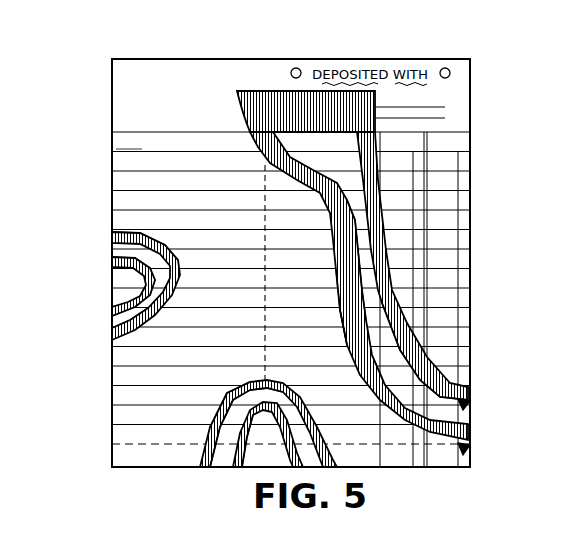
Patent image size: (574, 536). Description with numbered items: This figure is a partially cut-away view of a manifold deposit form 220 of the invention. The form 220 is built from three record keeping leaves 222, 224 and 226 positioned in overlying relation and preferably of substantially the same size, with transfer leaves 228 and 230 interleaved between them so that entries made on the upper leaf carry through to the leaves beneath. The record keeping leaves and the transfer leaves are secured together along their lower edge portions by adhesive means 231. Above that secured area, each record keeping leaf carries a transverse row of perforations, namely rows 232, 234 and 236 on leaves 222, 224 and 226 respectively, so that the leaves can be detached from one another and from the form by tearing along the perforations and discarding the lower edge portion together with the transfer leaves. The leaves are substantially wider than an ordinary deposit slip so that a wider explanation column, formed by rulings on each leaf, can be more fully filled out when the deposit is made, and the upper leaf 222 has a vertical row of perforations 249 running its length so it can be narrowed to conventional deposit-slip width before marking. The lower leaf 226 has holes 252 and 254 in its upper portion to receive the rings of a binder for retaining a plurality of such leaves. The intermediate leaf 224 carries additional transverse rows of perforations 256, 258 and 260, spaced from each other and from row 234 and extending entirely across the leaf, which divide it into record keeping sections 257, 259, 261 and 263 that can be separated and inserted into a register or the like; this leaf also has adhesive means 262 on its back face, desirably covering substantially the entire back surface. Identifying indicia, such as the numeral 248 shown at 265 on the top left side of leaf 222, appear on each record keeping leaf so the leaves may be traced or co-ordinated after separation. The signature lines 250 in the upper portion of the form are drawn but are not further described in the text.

The deposit form 220 is at (489, 63).
The record keeping leaf 222 is at (163, 63).
The record keeping leaf 224 is at (273, 138).
The record keeping leaf 226 is at (468, 181).
The transfer leaf 228 is at (343, 235).
The transfer leaf 230 is at (460, 114).
The adhesive means 231 is at (466, 455).
The row of perforations 232 is at (353, 444).
The row of perforations 234 is at (234, 438).
The row of perforations 236 is at (127, 320).
The numeral 248 is at (127, 143).
The row of perforations 249 is at (263, 311).
The signature lines 250 is at (438, 106).
The hole 252 is at (297, 68).
The hole 254 is at (443, 71).
The row of perforations 256 is at (359, 188).
The record keeping section 257 is at (345, 139).
The row of perforations 258 is at (370, 270).
The record keeping section 259 is at (357, 196).
The row of perforations 260 is at (377, 361).
The record keeping section 261 is at (360, 316).
The adhesive means 262 is at (466, 405).
The record keeping section 263 is at (388, 354).
The location of identifying indicia 265 is at (131, 148).